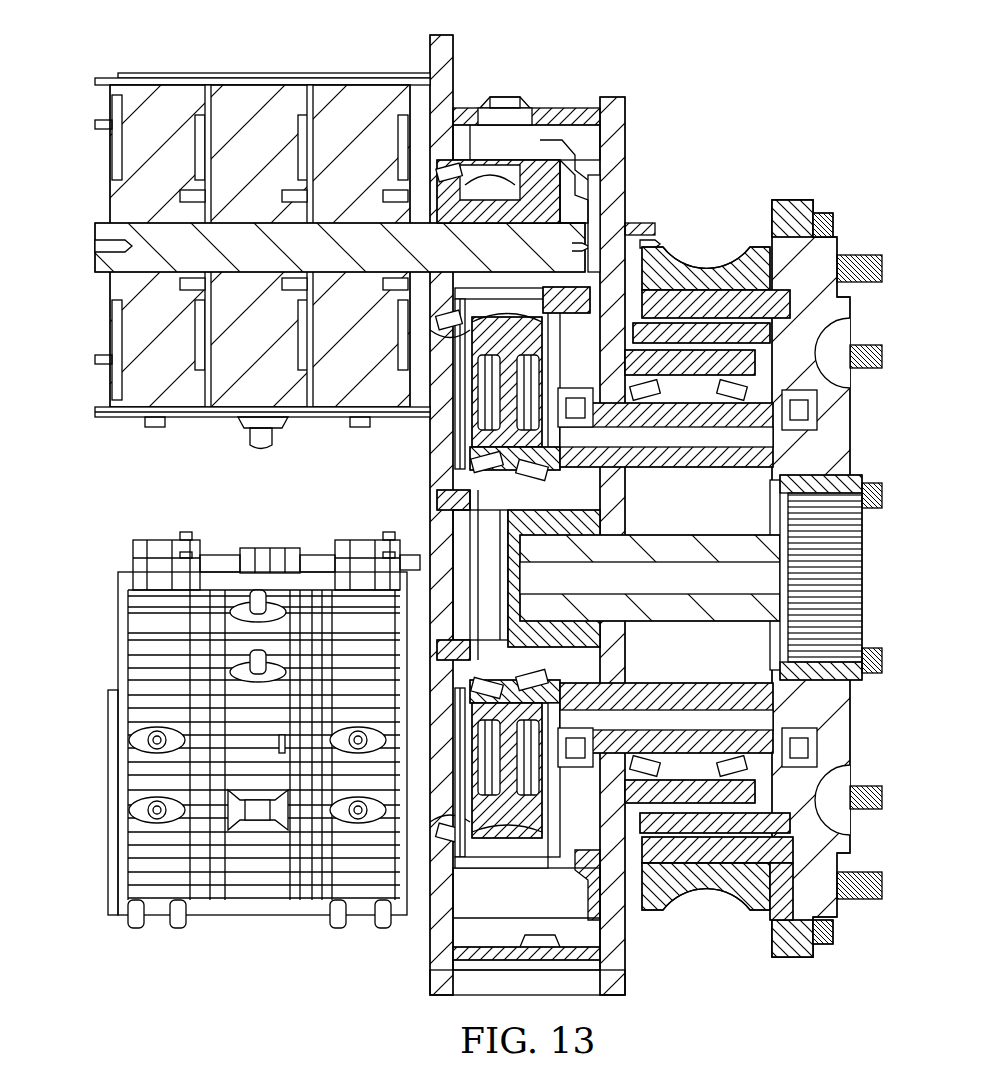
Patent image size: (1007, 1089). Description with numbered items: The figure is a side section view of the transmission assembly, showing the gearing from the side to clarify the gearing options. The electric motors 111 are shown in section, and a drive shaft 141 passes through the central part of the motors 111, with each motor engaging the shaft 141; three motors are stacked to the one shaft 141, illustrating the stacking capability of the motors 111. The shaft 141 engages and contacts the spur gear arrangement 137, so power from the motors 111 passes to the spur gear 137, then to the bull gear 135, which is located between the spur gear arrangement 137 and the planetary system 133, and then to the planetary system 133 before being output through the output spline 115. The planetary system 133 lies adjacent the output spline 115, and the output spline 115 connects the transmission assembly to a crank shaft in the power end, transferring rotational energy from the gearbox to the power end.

The electric motors 111 is at (178, 73).
The output spline 115 is at (862, 610).
The planetary system 133 is at (710, 800).
The bull gear 135 is at (430, 338).
The spur gear arrangement 137 is at (488, 180).
The drive shaft 141 is at (118, 260).